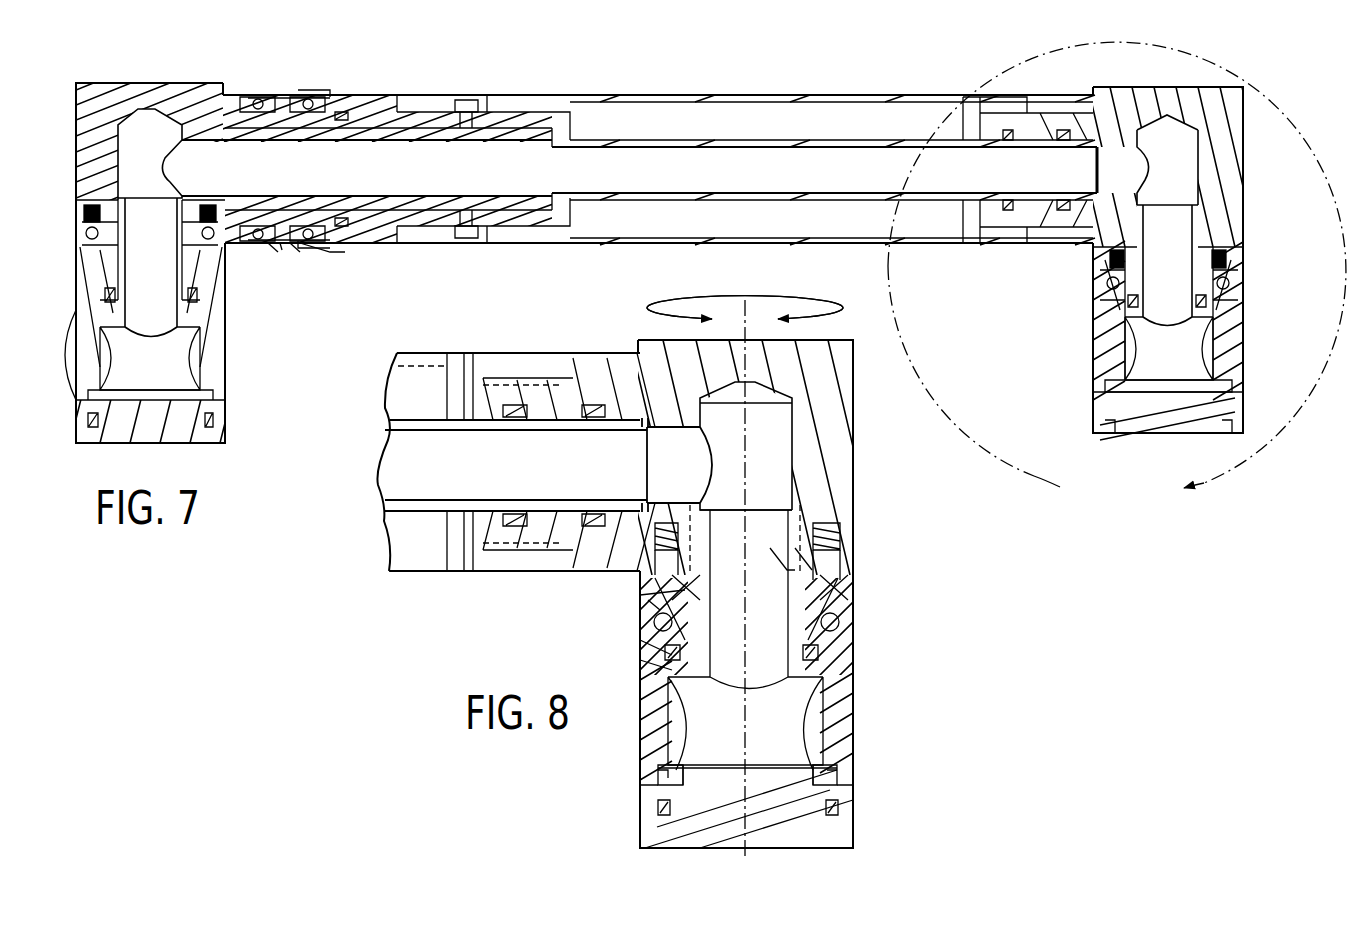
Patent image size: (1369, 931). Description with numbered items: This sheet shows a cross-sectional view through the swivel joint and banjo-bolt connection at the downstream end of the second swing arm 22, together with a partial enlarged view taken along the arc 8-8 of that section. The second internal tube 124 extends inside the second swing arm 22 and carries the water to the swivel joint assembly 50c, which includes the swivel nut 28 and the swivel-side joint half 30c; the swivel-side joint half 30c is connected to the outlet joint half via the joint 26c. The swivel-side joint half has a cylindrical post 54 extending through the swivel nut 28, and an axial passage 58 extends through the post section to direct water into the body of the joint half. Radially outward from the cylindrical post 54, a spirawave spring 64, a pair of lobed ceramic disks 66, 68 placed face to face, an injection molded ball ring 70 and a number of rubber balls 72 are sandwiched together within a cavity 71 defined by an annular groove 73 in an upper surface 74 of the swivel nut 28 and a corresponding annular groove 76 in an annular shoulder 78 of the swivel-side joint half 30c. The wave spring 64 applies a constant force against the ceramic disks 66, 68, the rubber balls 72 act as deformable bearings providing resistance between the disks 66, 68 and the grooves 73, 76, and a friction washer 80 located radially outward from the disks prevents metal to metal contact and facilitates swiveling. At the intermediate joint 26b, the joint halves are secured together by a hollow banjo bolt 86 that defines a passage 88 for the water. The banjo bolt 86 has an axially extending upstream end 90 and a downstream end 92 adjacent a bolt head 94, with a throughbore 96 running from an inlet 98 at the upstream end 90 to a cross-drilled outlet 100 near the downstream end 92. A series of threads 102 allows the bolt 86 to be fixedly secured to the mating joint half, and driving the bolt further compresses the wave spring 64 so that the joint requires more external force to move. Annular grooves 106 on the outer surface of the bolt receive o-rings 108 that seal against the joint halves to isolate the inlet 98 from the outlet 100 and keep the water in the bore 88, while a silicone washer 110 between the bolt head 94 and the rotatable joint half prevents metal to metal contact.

In FIG. 7, the second swing arm 22 is at (832, 95).
In FIG. 7, the intermediate joint 26b is at (1266, 86).
In FIG. 8, the intermediate joint 26b is at (970, 592).
In FIG. 7, the joint 26c is at (287, 60).
In FIG. 7, the swivel nut 28 is at (340, 97).
In FIG. 7, the swivel-side joint half 30c is at (85, 112).
In FIG. 7, the swivel joint assembly 50c is at (270, 82).
In FIG. 7, the cylindrical post 54 is at (458, 140).
In FIG. 7, the passage 58 is at (354, 184).
In FIG. 8, the spirawave spring 64 is at (838, 530).
In FIG. 8, the lobed ceramic disk 66 is at (848, 607).
In FIG. 8, the lobed ceramic disk 68 is at (847, 580).
In FIG. 8, the injection molded ball ring 70 is at (840, 557).
In FIG. 7, the cavity 71 is at (277, 245).
In FIG. 7, the rubber balls 72 is at (310, 252).
In FIG. 8, the rubber balls 72 is at (650, 638).
In FIG. 7, the annular groove 73 is at (294, 248).
In FIG. 7, the upper surface 74 is at (282, 250).
In FIG. 7, the annular groove 76 is at (260, 100).
In FIG. 7, the annular shoulder 78 is at (313, 92).
In FIG. 8, the friction washer 80 is at (650, 596).
In FIG. 7, the hollow banjo bolt 86 is at (1190, 368).
In FIG. 8, the hollow banjo bolt 86 is at (785, 752).
In FIG. 7, the passage 88 is at (1159, 361).
In FIG. 8, the passage 88 is at (759, 737).
In FIG. 7, the upstream end 90 is at (1158, 192).
In FIG. 8, the downstream end 92 is at (825, 858).
In FIG. 7, the bolt head 94 is at (1143, 422).
In FIG. 8, the bolt head 94 is at (793, 827).
In FIG. 7, the throughbore 96 is at (1160, 274).
In FIG. 7, the inlet 98 is at (1158, 113).
In FIG. 7, the cross-drilled outlet 100 is at (1130, 348).
In FIG. 8, the threads 102 is at (790, 527).
In FIG. 8, the annular grooves 106 is at (653, 668).
In FIG. 8, the o-rings 108 is at (793, 572).
In FIG. 8, the silicone washer 110 is at (838, 775).
In FIG. 7, the second internal tube 124 is at (836, 147).
In FIG. 7, the enlargement arc 8 is at (1034, 476).